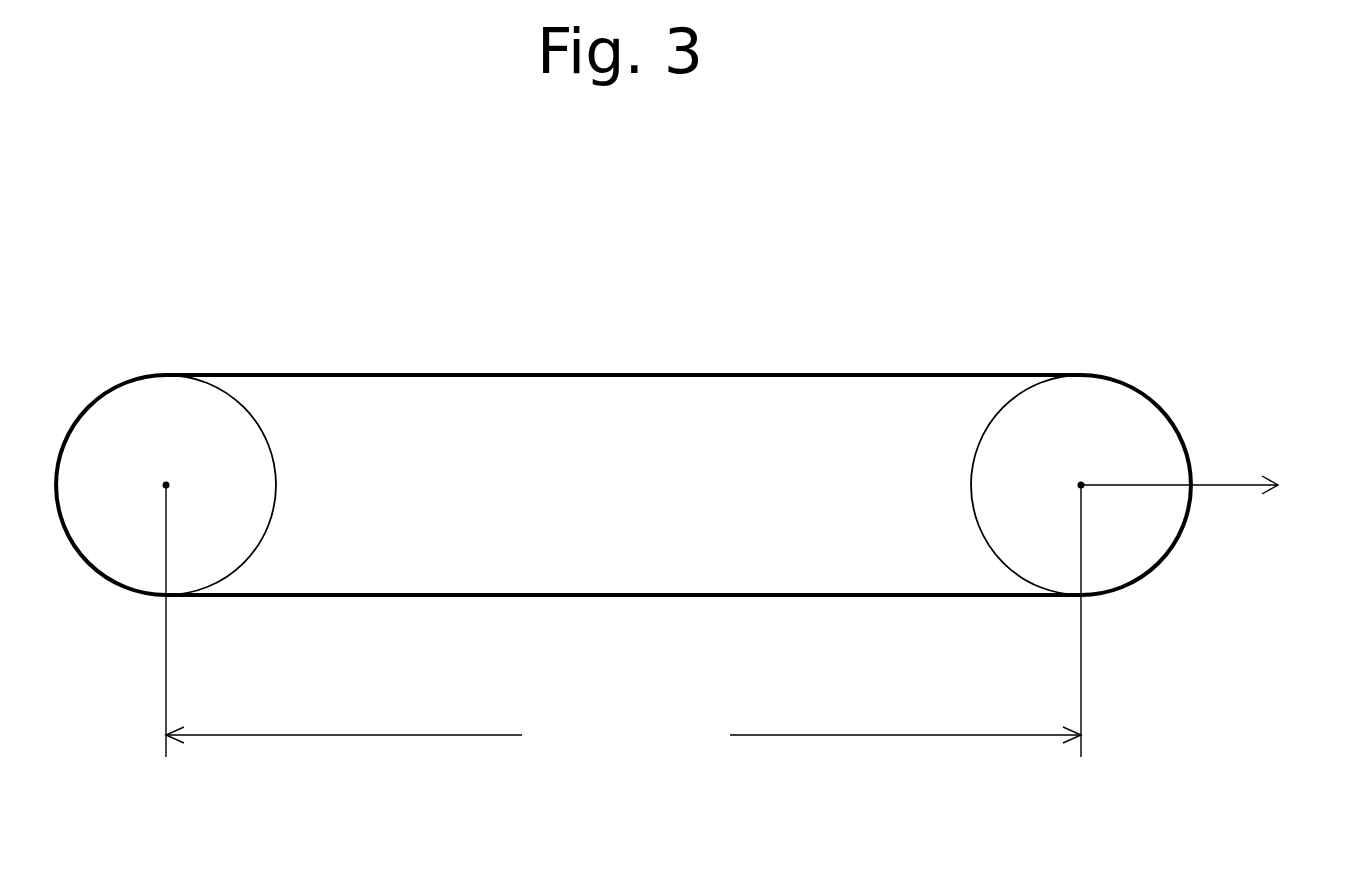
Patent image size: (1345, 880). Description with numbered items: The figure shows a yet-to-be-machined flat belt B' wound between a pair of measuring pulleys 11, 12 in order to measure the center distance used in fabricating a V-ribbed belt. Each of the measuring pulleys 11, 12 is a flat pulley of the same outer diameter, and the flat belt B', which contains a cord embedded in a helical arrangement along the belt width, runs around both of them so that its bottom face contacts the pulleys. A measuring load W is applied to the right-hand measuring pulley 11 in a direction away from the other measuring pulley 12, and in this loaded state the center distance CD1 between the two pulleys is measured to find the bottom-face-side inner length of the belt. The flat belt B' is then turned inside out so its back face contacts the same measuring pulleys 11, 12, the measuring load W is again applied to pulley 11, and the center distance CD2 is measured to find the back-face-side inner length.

The measuring pulley 11 is at (980, 437).
The measuring pulley 12 is at (265, 428).
The flat belt B' is at (623, 424).
The measuring load W is at (1200, 483).
The center distance CD1 is at (623, 624).
The center distance CD2 is at (623, 624).